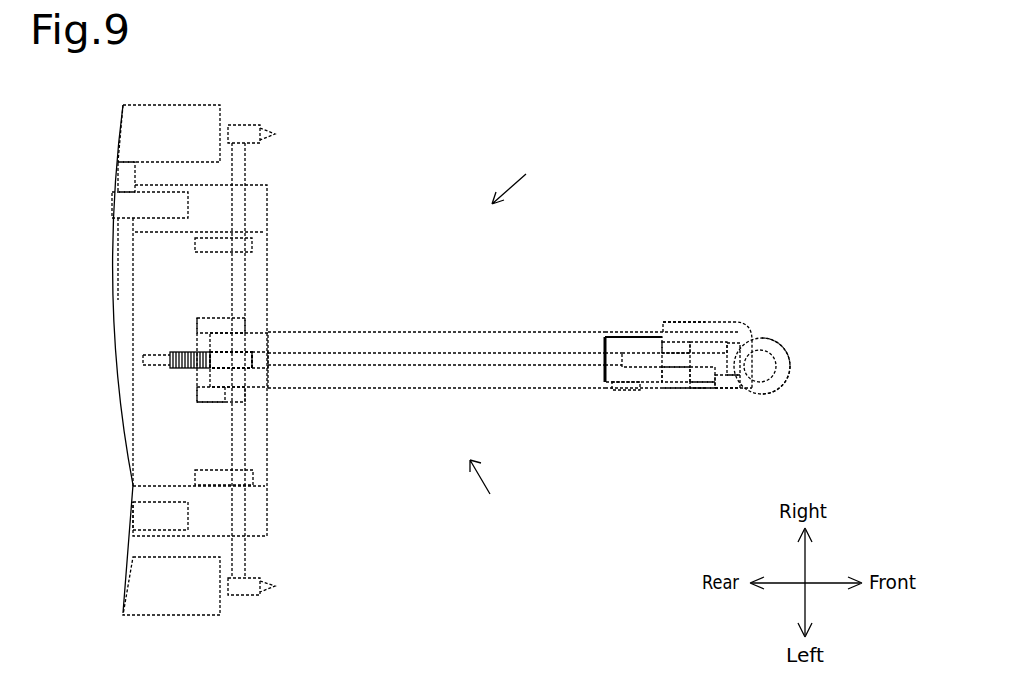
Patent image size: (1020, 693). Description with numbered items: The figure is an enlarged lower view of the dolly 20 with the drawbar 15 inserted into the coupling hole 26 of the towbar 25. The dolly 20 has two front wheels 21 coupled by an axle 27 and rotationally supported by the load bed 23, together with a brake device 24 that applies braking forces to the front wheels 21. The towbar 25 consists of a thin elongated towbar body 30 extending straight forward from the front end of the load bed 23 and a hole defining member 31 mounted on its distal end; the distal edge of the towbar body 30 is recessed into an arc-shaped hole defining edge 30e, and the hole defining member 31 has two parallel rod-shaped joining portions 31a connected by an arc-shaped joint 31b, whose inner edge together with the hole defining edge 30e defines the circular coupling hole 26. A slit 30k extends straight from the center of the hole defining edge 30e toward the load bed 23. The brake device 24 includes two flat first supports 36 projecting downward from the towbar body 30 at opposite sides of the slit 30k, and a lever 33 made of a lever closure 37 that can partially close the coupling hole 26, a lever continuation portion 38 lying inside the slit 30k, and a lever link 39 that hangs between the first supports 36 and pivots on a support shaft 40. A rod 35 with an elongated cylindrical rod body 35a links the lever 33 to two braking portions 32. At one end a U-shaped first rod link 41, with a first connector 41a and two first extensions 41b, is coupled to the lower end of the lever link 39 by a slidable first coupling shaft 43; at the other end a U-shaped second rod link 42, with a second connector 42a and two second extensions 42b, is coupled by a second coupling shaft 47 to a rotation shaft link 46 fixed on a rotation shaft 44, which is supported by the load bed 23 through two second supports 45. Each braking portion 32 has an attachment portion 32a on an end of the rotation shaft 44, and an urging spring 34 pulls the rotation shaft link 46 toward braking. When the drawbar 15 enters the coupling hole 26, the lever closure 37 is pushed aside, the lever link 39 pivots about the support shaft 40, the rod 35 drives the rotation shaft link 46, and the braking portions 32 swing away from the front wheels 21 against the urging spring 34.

The drawbar 15 is at (775, 366).
The dolly 20 is at (510, 175).
The front wheels 21 is at (123, 133).
The load bed 23 is at (267, 207).
The brake device 24 is at (490, 490).
The towbar 25 is at (445, 331).
The coupling hole 26 is at (765, 338).
The axle 27 is at (112, 292).
The towbar body 30 is at (483, 331).
The hole defining edge 30e is at (735, 322).
The slit 30k is at (702, 392).
The hole defining member 31 is at (790, 372).
The joining portions 31a is at (680, 322).
The joint 31b is at (782, 392).
The braking portions 32 is at (245, 125).
The attachment portion 32a is at (258, 143).
The lever 33 is at (728, 390).
The urging spring 34 is at (177, 352).
The rod 35 is at (428, 388).
The rod body 35a is at (480, 388).
The first supports 36 is at (665, 342).
The lever closure 37 is at (738, 388).
The lever continuation portion 38 is at (705, 343).
The lever link 39 is at (650, 353).
The support shaft 40 is at (672, 392).
The first rod link 41 is at (607, 388).
The first connector 41a is at (603, 338).
The first extensions 41b is at (618, 337).
The second rod link 42 is at (270, 378).
The second connector 42a is at (225, 334).
The second extensions 42b is at (268, 358).
The first coupling shaft 43 is at (622, 392).
The rotation shaft 44 is at (246, 436).
The second supports 45 is at (252, 245).
The rotation shaft link 46 is at (228, 368).
The second coupling shaft 47 is at (202, 396).